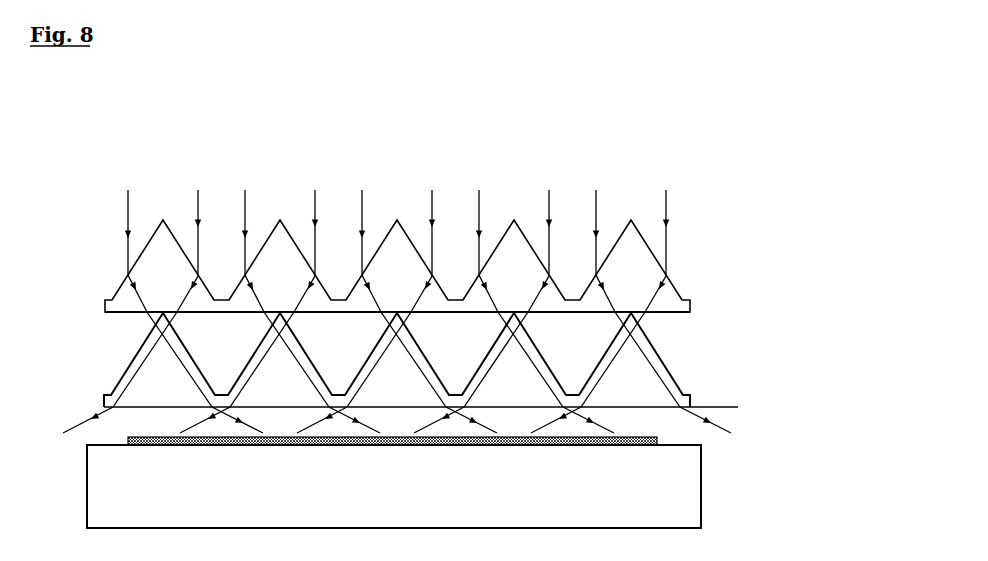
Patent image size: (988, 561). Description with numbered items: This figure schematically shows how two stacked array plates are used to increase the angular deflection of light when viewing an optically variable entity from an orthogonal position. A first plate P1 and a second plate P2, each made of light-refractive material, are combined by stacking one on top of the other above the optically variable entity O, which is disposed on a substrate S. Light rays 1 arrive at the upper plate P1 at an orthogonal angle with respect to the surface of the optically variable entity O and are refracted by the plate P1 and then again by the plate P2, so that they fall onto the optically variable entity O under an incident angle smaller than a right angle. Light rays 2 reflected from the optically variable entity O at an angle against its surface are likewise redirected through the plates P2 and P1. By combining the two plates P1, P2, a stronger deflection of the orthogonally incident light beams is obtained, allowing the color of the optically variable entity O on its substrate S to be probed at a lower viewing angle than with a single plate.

The light rays 1 is at (427, 302).
The light rays 2 is at (367, 302).
The plate of light-refractive material P1 is at (666, 298).
The plate of light-refractive material P2 is at (634, 378).
The optically variable entity O is at (657, 438).
The substrate S is at (676, 490).